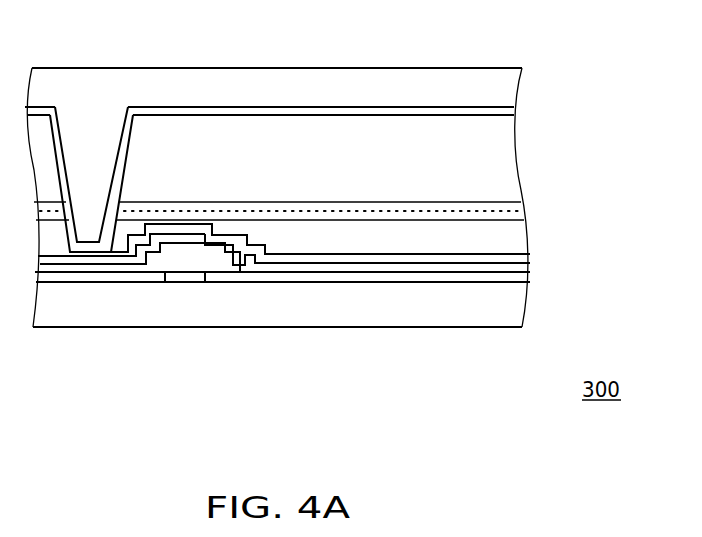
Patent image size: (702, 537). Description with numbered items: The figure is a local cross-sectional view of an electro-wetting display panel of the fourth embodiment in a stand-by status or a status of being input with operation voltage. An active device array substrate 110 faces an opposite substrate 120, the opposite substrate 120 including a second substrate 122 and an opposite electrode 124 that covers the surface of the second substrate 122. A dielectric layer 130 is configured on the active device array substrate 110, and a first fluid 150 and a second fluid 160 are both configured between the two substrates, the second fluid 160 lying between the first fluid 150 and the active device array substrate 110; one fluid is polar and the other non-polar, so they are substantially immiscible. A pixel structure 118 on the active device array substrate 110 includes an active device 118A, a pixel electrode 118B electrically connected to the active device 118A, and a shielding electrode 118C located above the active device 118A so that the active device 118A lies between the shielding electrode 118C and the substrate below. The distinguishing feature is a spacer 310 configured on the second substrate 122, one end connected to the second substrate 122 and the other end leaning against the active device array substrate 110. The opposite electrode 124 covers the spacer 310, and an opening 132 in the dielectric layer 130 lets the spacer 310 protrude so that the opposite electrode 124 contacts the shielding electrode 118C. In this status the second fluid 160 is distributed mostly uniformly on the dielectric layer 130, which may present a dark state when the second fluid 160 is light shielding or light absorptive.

The active device array substrate 110 is at (551, 245).
The pixel structure 118 is at (298, 398).
The active device 118A is at (183, 287).
The pixel electrode 118B is at (279, 256).
The shielding electrode 118C is at (100, 257).
The opposite substrate 120 is at (551, 70).
The second substrate 122 is at (400, 78).
The opposite electrode 124 is at (447, 110).
The dielectric layer 130 is at (362, 243).
The opening 132 is at (122, 232).
The first fluid 150 is at (503, 157).
The second fluid 160 is at (520, 212).
The spacer 310 is at (93, 125).